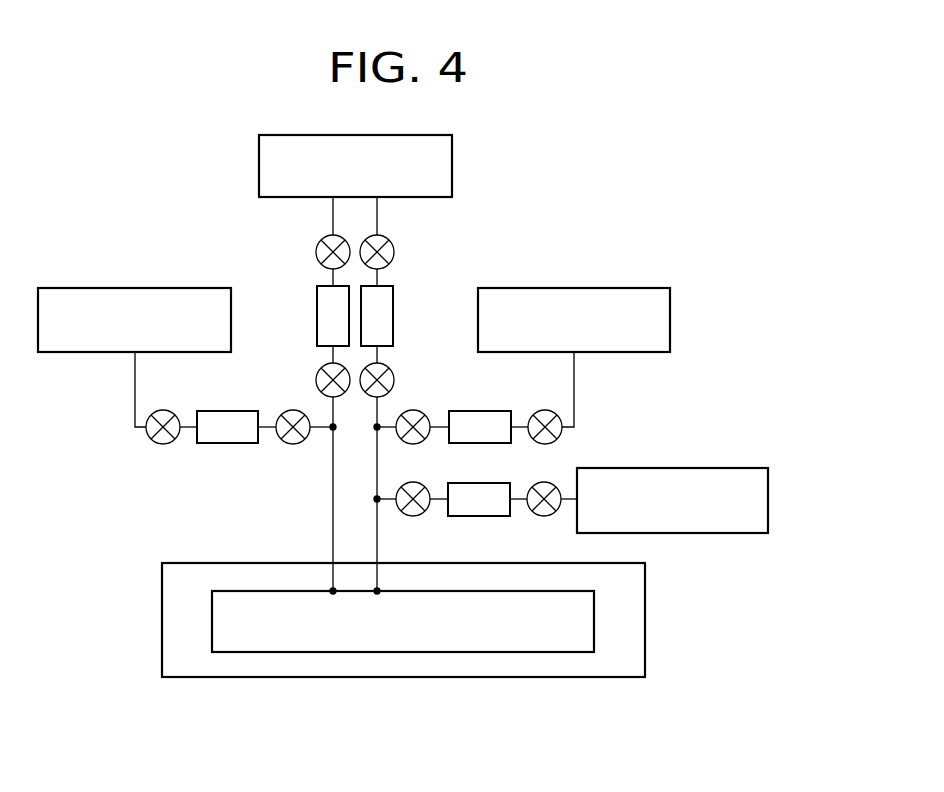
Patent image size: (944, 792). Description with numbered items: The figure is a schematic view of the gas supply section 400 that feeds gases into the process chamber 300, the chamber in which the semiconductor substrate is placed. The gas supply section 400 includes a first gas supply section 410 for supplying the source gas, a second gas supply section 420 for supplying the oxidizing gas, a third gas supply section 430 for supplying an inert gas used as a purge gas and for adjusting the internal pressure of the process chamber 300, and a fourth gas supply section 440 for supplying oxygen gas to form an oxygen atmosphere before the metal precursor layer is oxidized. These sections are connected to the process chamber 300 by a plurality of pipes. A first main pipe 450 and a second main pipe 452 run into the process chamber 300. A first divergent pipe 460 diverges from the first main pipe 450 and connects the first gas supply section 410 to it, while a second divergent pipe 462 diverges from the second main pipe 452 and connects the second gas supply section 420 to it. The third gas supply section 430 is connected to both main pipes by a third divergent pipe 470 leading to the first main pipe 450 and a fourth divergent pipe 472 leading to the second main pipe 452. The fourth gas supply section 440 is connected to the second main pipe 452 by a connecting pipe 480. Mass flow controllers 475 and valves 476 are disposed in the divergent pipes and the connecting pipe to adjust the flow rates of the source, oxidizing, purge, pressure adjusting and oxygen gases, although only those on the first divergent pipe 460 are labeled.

The process chamber 300 is at (595, 617).
The gas supply section 400 is at (552, 196).
The first gas supply section 410 is at (136, 288).
The second gas supply section 420 is at (575, 288).
The third gas supply section 430 is at (259, 165).
The fourth gas supply section 440 is at (720, 468).
The first main pipe 450 is at (333, 508).
The second main pipe 452 is at (377, 540).
The first divergent pipe 460 is at (135, 385).
The second divergent pipe 462 is at (574, 386).
The third divergent pipe 470 is at (333, 214).
The fourth divergent pipe 472 is at (377, 214).
The mass flow controller 475 is at (216, 444).
The valve 476 is at (153, 441).
The connecting pipe 480 is at (517, 496).